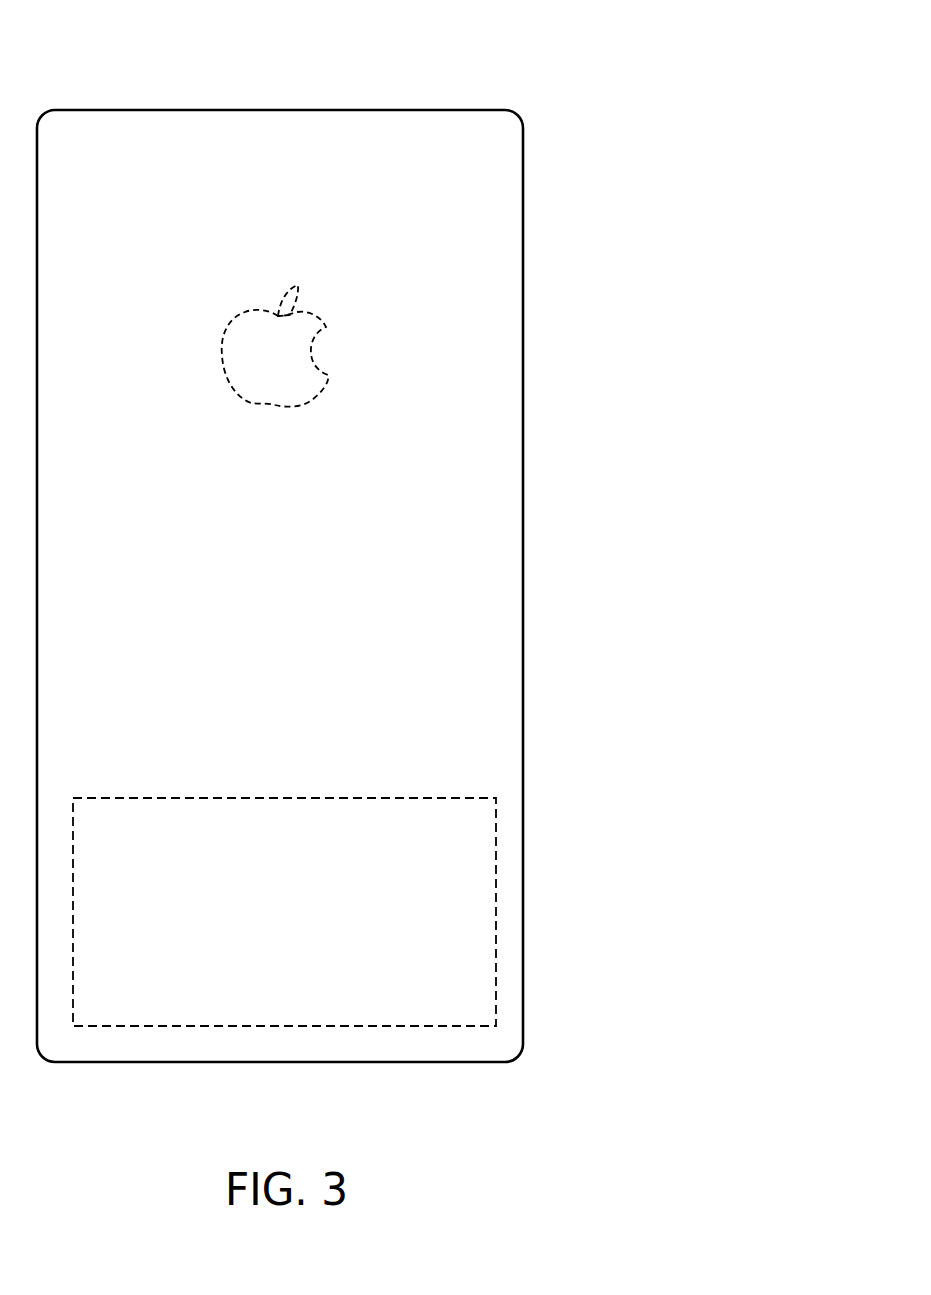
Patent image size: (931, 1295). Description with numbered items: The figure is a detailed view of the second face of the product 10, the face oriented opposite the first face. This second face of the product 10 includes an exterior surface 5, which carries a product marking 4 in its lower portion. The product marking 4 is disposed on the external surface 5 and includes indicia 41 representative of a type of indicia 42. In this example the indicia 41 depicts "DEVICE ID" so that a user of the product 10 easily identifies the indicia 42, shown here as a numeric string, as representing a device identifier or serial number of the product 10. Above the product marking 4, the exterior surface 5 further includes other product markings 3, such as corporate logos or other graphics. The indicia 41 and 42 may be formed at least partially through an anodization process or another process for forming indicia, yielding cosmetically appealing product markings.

The product 10 is at (558, 30).
The exterior surface 5 is at (84, 160).
The other product markings 3 is at (340, 404).
The product marking 4 is at (425, 797).
The indicia 41 is at (465, 906).
The indicia 42 is at (420, 975).